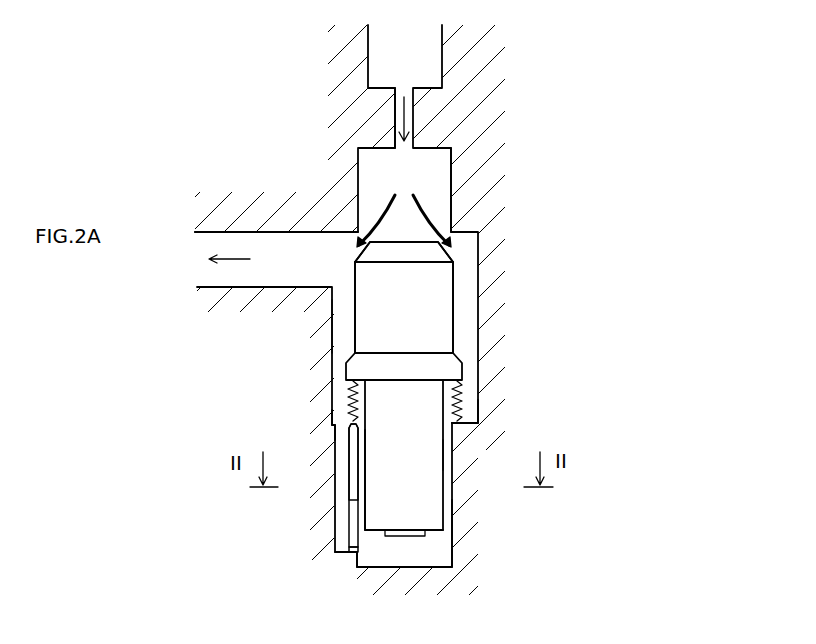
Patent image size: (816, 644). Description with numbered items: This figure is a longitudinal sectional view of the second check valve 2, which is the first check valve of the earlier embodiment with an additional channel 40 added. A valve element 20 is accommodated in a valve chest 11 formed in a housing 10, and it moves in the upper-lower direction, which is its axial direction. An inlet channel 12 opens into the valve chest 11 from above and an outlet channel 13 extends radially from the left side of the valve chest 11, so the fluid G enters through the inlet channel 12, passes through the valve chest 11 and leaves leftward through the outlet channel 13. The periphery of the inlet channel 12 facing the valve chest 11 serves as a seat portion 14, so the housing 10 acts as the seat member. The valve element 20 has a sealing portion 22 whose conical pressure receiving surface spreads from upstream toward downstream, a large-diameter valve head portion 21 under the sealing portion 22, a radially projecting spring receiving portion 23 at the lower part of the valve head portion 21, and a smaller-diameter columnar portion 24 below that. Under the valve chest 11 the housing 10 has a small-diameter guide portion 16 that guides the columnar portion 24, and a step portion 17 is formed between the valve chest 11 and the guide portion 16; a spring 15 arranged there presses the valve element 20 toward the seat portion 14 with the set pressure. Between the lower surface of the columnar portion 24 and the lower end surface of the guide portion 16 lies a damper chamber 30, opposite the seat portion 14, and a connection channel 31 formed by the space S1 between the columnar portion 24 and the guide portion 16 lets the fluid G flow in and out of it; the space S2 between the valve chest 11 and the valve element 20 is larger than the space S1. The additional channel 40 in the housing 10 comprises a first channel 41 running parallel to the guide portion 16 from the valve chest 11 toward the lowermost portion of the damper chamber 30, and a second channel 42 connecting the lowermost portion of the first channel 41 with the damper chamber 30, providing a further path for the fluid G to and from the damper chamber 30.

The second check valve 2 is at (594, 167).
The housing 10 is at (536, 366).
The valve chest 11 is at (464, 301).
The inlet channel 12 is at (452, 150).
The outlet channel 13 is at (281, 245).
The seat portion 14 is at (455, 195).
The spring 15 is at (478, 415).
The guide portion 16 is at (357, 566).
The step portion 17 is at (337, 425).
The valve element 20 is at (410, 493).
The valve head portion 21 is at (413, 318).
The sealing portion 22 is at (447, 253).
The spring receiving portion 23 is at (458, 388).
The columnar portion 24 is at (410, 472).
The damper chamber 30 is at (422, 550).
The connection channel 31 is at (452, 515).
The additional channel 40 is at (243, 528).
The first channel 41 is at (347, 532).
The second channel 42 is at (355, 550).
The space S1 is at (428, 455).
The space S2 is at (375, 327).
The fluid G is at (357, 228).